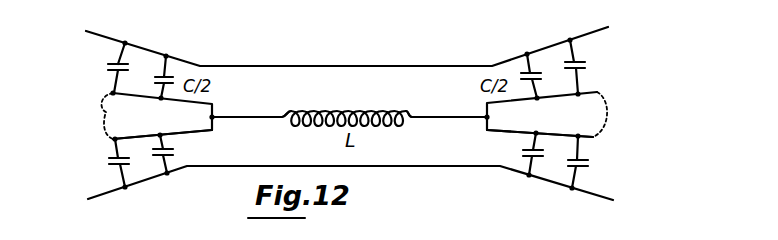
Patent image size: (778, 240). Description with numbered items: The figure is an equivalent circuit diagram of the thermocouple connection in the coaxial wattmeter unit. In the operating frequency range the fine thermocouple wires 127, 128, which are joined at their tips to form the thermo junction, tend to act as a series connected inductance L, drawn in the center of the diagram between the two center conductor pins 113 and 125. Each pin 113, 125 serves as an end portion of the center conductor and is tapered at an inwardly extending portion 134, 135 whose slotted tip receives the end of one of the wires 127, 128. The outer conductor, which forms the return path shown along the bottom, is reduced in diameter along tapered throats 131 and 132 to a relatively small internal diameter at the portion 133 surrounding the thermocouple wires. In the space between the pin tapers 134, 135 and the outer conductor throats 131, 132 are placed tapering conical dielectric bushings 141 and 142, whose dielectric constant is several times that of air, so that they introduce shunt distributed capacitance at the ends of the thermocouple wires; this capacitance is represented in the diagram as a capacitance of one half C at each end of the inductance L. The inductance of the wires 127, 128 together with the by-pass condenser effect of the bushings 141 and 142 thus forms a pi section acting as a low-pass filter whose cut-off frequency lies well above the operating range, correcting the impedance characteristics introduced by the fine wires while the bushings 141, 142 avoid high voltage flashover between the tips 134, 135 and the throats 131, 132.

The pin 113 is at (597, 92).
The pin 125 is at (110, 93).
The thermocouple wire 127 is at (352, 111).
The thermocouple wire 128 is at (359, 98).
The tapered throat 131 is at (540, 179).
The tapered throat 132 is at (142, 188).
The portion 133 is at (410, 166).
The tapering portion 134 is at (583, 146).
The tapering portion 135 is at (113, 139).
The dielectric bushing 141 is at (565, 62).
The dielectric bushing 142 is at (157, 73).